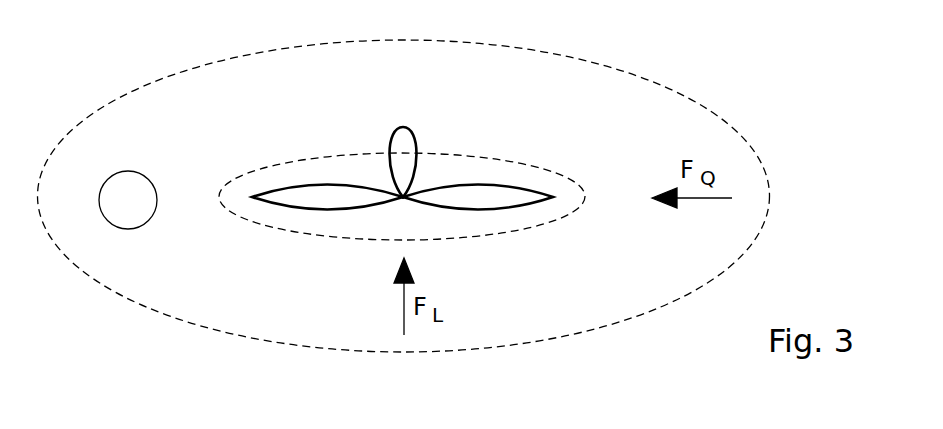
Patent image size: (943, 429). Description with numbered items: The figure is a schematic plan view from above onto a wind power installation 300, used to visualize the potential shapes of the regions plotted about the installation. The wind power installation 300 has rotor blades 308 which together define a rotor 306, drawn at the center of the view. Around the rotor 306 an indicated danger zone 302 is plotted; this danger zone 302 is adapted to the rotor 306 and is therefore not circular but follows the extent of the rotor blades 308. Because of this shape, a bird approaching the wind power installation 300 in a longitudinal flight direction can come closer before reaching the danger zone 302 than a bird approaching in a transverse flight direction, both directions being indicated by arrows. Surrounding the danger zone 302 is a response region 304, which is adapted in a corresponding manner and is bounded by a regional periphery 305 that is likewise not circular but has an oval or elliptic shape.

The wind power installation 300 is at (395, 142).
The danger zone 302 is at (498, 170).
The response region 304 is at (128, 200).
The regional periphery 305 is at (618, 68).
The rotor 306 is at (402, 199).
The rotor blades 308 is at (316, 197).